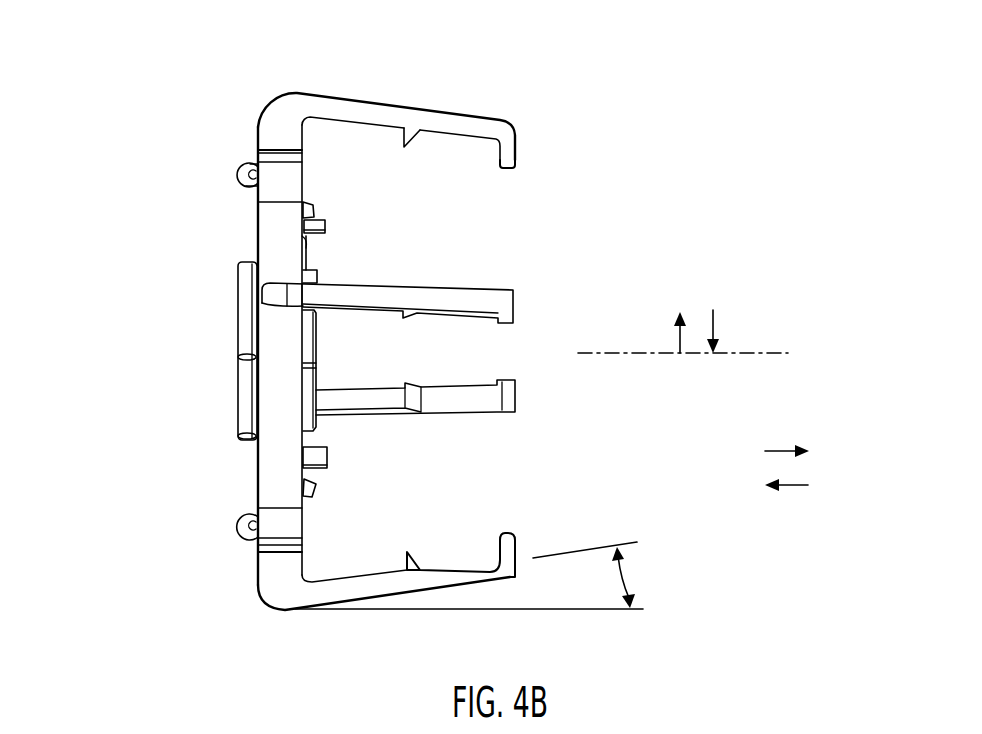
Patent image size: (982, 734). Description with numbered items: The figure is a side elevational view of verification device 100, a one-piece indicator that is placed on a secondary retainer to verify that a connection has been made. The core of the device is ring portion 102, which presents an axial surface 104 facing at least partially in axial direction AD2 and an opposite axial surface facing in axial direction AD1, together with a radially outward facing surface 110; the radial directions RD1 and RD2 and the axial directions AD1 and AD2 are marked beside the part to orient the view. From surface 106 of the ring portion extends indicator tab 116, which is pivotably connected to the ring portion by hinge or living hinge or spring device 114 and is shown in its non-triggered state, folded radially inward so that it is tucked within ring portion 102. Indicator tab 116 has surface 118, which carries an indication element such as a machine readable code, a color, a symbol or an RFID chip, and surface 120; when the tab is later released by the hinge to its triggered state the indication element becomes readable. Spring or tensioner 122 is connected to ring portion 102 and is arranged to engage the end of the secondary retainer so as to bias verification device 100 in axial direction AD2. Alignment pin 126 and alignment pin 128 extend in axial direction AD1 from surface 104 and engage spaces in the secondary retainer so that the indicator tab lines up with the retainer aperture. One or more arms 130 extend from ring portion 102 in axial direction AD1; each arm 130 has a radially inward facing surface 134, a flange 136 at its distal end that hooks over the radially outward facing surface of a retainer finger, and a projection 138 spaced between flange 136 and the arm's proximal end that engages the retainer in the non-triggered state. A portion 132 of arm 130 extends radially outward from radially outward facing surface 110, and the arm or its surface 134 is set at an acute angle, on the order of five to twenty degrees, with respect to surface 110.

The verification device 100 is at (146, 74).
The ring portion 102 is at (267, 217).
The surface 104 is at (303, 177).
The surface 106 is at (258, 460).
The radially outward facing surface 110 is at (263, 245).
The hinge or living hinge or spring device 114 is at (239, 168).
The indicator tab 116 is at (244, 171).
The surface 118 is at (252, 191).
The surface 120 is at (313, 208).
The spring or tensioner 122 is at (306, 247).
The alignment pin 126 is at (327, 227).
The alignment pin 128 is at (327, 457).
The arm 130 is at (362, 107).
The portion 132 is at (263, 130).
The radially inward facing surface 134 is at (469, 139).
The flange 136 is at (508, 170).
The projection 138 is at (412, 146).
The radial direction RD1 is at (678, 331).
The radial direction RD2 is at (717, 332).
The axial direction AD1 is at (785, 451).
The axial direction AD2 is at (790, 486).